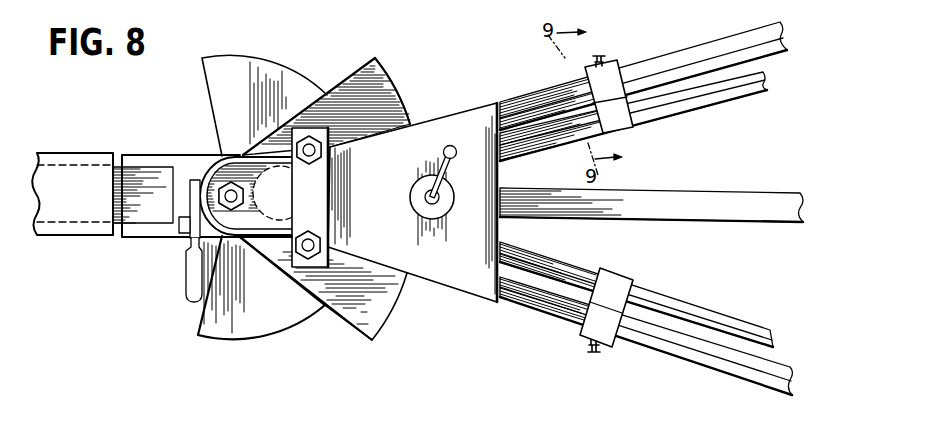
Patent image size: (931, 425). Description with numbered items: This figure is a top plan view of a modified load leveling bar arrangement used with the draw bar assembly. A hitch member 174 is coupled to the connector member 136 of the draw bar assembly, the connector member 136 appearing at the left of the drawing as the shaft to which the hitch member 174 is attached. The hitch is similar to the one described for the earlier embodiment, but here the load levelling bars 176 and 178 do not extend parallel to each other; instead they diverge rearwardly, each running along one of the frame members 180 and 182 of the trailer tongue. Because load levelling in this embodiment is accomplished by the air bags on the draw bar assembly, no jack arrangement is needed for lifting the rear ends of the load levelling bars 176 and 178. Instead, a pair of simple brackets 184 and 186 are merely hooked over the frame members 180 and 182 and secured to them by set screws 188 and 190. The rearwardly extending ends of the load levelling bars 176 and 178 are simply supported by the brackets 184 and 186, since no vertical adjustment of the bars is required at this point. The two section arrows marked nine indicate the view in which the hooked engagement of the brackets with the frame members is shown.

The connector member 136 is at (83, 162).
The hitch member 174 is at (152, 256).
The load levelling bar 176 is at (722, 323).
The load levelling bar 178 is at (717, 95).
The frame member 180 is at (700, 360).
The frame member 182 is at (705, 50).
The bracket 184 is at (593, 320).
The bracket 186 is at (613, 77).
The set screw 188 is at (593, 353).
The set screw 190 is at (597, 53).